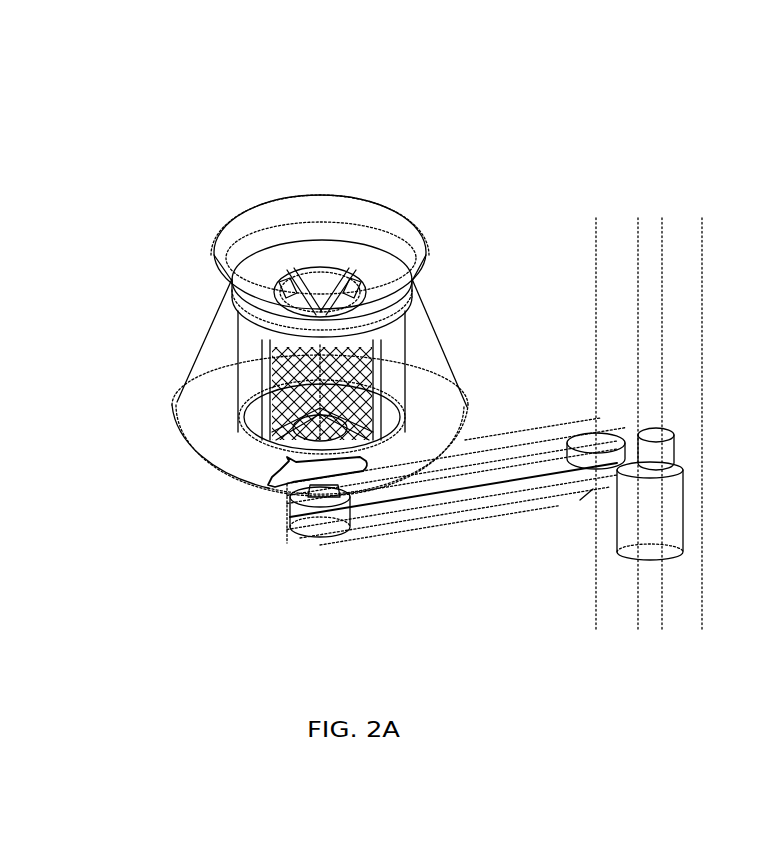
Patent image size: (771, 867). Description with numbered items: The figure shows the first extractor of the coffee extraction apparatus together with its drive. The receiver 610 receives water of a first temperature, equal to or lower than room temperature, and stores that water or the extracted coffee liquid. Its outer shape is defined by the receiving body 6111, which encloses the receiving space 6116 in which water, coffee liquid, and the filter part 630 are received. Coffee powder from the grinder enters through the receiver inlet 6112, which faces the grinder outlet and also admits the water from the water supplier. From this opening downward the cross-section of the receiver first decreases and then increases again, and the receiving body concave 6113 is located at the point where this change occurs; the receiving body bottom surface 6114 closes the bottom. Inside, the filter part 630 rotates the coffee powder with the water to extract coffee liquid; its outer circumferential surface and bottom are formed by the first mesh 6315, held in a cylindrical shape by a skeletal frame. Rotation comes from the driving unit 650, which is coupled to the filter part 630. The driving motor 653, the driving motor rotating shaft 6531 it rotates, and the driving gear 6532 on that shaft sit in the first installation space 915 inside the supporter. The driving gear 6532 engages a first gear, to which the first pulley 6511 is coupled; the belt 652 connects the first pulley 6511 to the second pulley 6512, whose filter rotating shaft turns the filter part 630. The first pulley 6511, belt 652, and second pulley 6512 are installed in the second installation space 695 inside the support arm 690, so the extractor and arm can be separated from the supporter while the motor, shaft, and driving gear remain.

The receiver 610 is at (214, 208).
The receiver inlet 6112 is at (323, 211).
The receiving body concave 6113 is at (236, 291).
The receiving body 6111 is at (200, 352).
The receiving body bottom surface 6114 is at (262, 462).
The receiving space 6116 is at (442, 390).
The filter part 630 is at (252, 382).
The first mesh 6315 is at (240, 392).
The first installation space 915 is at (648, 364).
The support arm 690 is at (446, 522).
The second installation space 695 is at (501, 506).
The belt 652 is at (388, 517).
The second pulley 6512 is at (322, 537).
The driving unit 650 is at (657, 522).
The driving motor 653 is at (677, 538).
The driving motor rotating shaft 6531 is at (675, 460).
The driving gear 6532 is at (674, 440).
The first pulley 6511 is at (582, 500).